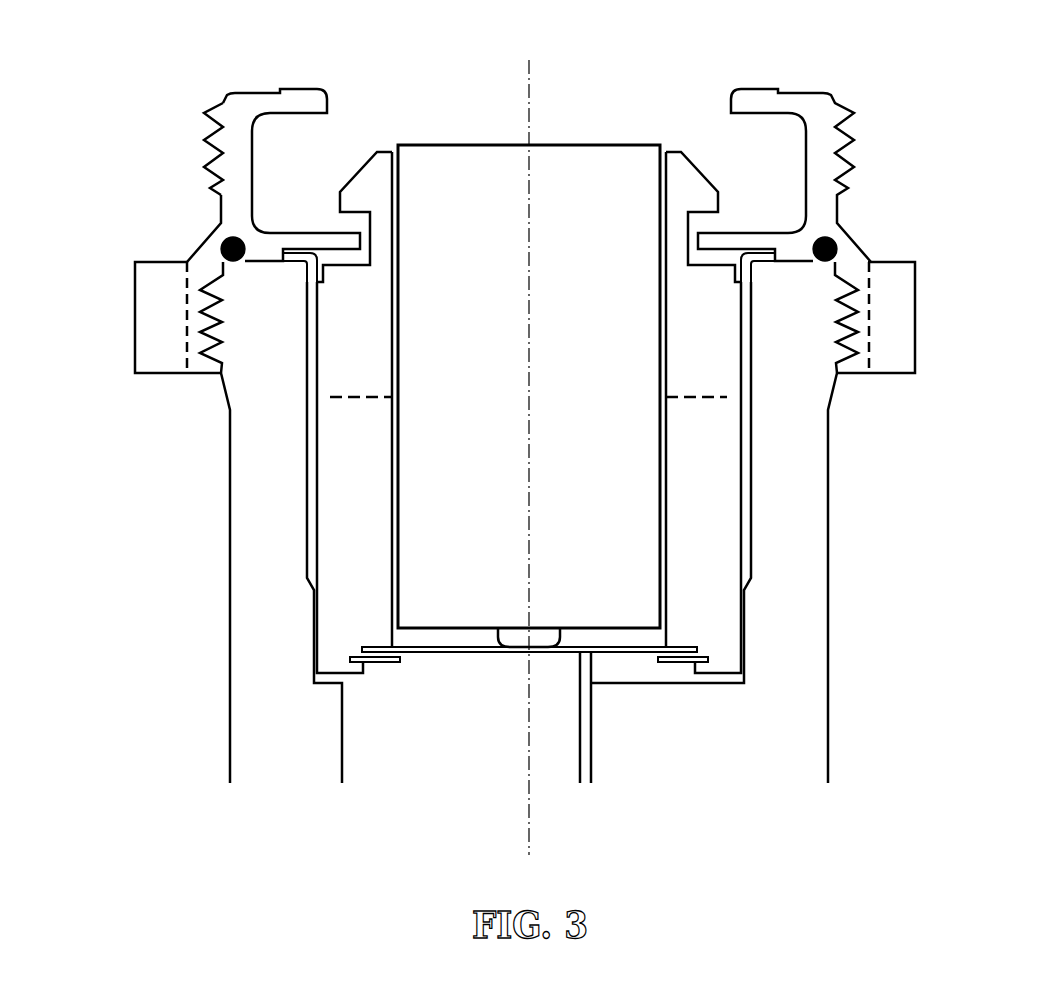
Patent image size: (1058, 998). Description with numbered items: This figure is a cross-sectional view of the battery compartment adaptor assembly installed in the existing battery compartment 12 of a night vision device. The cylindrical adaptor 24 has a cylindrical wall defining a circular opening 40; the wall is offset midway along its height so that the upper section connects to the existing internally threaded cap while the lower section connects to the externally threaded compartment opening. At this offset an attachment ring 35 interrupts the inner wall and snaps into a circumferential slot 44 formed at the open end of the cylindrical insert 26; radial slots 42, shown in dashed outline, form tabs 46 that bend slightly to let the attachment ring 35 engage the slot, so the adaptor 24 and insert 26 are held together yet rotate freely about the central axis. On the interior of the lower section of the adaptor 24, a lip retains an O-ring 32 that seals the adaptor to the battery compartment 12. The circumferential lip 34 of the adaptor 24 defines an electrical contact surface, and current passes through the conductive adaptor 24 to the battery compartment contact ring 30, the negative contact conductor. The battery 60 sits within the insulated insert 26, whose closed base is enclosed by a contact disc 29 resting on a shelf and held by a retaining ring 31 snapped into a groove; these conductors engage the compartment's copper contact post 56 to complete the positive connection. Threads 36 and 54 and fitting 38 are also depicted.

The battery compartment 12 is at (790, 543).
The cylindrical adaptor 24 is at (232, 204).
The cylindrical insert 26 is at (343, 545).
The contact disc 29 is at (475, 655).
The contact ring 30 is at (763, 263).
The retaining ring 31 is at (675, 658).
The O-ring 32 is at (237, 264).
The circumferential lip 34 is at (758, 85).
The attachment ring 35 is at (757, 232).
The threads 36 is at (212, 150).
The port fitting 38 is at (915, 325).
The circular opening 40 is at (513, 103).
The radial slots 42 is at (689, 375).
The circumferential slot 44 is at (362, 226).
The tabs 46 is at (700, 165).
The threads 54 is at (203, 310).
The battery compartment electrical contact 56 is at (578, 752).
The battery 60 is at (565, 509).